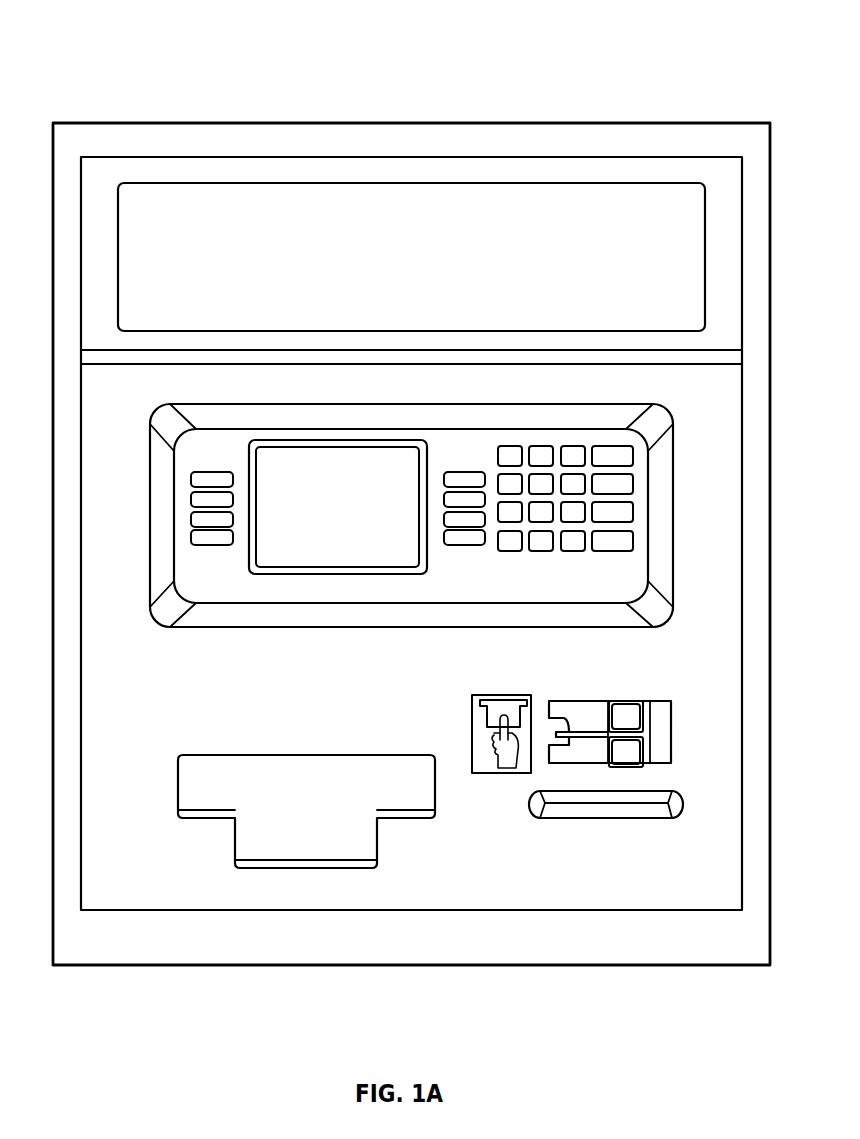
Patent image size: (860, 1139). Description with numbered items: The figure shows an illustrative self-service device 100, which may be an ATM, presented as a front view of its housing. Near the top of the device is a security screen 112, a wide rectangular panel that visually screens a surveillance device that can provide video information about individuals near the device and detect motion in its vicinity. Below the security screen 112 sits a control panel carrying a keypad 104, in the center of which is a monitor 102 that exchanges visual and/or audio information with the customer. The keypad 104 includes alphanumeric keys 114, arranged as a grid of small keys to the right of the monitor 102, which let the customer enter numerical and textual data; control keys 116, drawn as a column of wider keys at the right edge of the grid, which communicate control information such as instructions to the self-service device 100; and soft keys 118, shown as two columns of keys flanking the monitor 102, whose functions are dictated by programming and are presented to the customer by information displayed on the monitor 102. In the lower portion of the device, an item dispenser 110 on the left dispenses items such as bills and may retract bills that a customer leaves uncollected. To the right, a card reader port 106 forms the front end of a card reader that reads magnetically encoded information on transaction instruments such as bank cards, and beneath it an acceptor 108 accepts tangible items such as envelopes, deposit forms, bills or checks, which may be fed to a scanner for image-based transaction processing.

The self-service device 100 is at (99, 40).
The monitor 102 is at (363, 443).
The keypad 104 is at (458, 587).
The card reader port 106 is at (668, 701).
The acceptor 108 is at (668, 791).
The item dispenser 110 is at (203, 755).
The security screen 112 is at (628, 183).
The alphanumeric keys 114 is at (506, 552).
The control keys 116 is at (565, 488).
The soft keys 118 is at (217, 462).